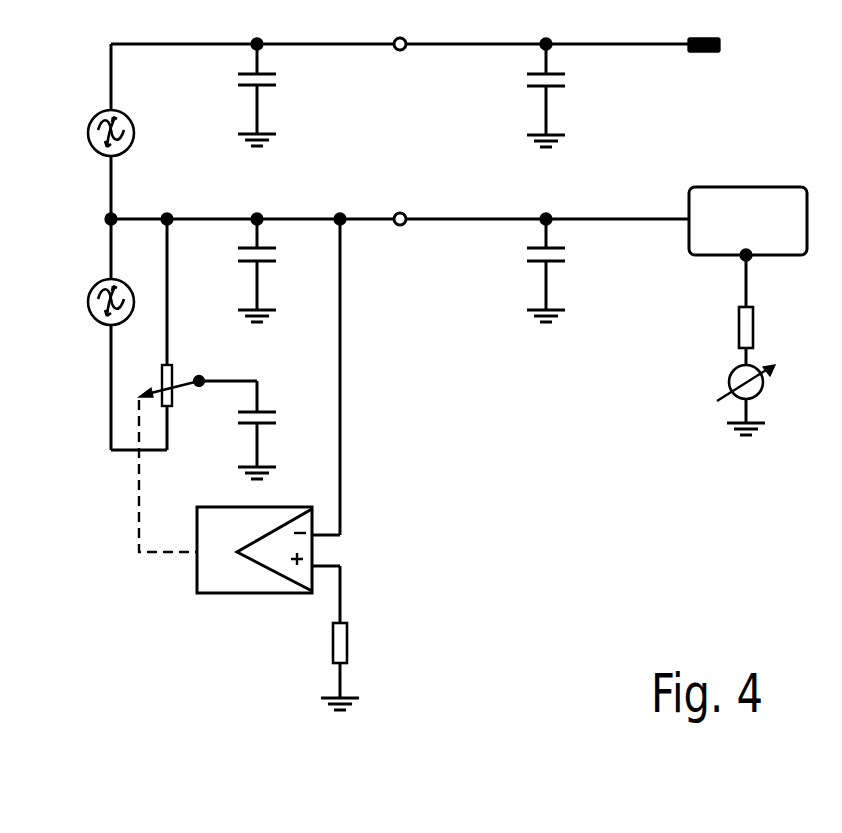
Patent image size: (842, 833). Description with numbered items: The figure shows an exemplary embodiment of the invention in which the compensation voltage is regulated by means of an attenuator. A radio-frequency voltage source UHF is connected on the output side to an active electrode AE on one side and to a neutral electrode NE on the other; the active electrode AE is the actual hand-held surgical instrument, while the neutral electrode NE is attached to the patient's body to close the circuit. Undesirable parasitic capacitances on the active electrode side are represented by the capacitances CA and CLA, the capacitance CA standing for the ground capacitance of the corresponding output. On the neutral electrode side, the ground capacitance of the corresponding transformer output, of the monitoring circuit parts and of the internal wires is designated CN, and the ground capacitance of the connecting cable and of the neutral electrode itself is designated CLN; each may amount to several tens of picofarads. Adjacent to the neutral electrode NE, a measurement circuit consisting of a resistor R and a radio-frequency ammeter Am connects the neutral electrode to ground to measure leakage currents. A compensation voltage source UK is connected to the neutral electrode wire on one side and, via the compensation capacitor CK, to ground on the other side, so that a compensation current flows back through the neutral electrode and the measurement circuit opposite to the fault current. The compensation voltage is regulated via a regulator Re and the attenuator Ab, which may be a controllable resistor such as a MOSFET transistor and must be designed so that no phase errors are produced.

The radio-frequency voltage source UHF is at (79, 162).
The compensation voltage source UK is at (77, 329).
The capacitance CA is at (267, 95).
The capacitance CN is at (270, 270).
The capacitance CLA is at (562, 95).
The capacitance CLN is at (565, 270).
The active electrode AE is at (704, 31).
The neutral electrode NE is at (746, 204).
The resistor R is at (760, 310).
The radio-frequency ammeter Am is at (762, 400).
The attenuator Ab is at (172, 373).
The compensation capacitor CK is at (268, 430).
The regulator Re is at (254, 573).